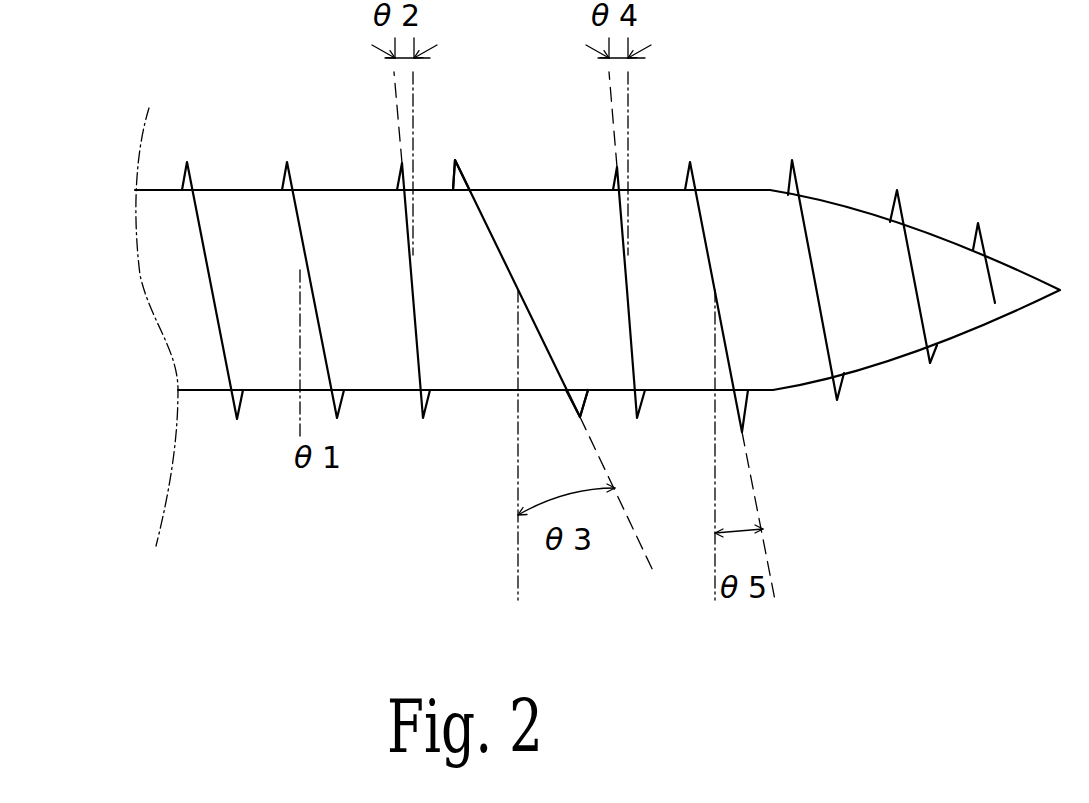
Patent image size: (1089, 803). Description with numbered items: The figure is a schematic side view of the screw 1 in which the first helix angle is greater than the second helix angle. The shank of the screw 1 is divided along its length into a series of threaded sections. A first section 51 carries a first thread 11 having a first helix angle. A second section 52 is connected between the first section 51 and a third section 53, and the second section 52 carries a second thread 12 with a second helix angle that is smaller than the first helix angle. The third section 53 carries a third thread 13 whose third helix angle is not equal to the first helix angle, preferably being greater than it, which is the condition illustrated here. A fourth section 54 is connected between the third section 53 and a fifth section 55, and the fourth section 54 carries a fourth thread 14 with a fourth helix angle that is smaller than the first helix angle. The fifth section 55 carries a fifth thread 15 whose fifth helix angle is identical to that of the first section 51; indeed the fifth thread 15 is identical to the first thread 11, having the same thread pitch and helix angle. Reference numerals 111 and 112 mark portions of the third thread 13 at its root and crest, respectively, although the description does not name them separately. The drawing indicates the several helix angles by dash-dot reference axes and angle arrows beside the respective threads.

The screw 1 is at (242, 220).
The first thread 11 is at (300, 227).
The second thread 12 is at (407, 217).
The third thread 13 is at (498, 248).
The fourth thread 14 is at (635, 318).
The fifth thread 15 is at (823, 320).
The thread root 111 is at (585, 425).
The thread crest 112 is at (455, 160).
The first section 51 is at (252, 395).
The second section 52 is at (403, 392).
The third section 53 is at (507, 392).
The fourth section 54 is at (626, 190).
The fifth section 55 is at (802, 197).